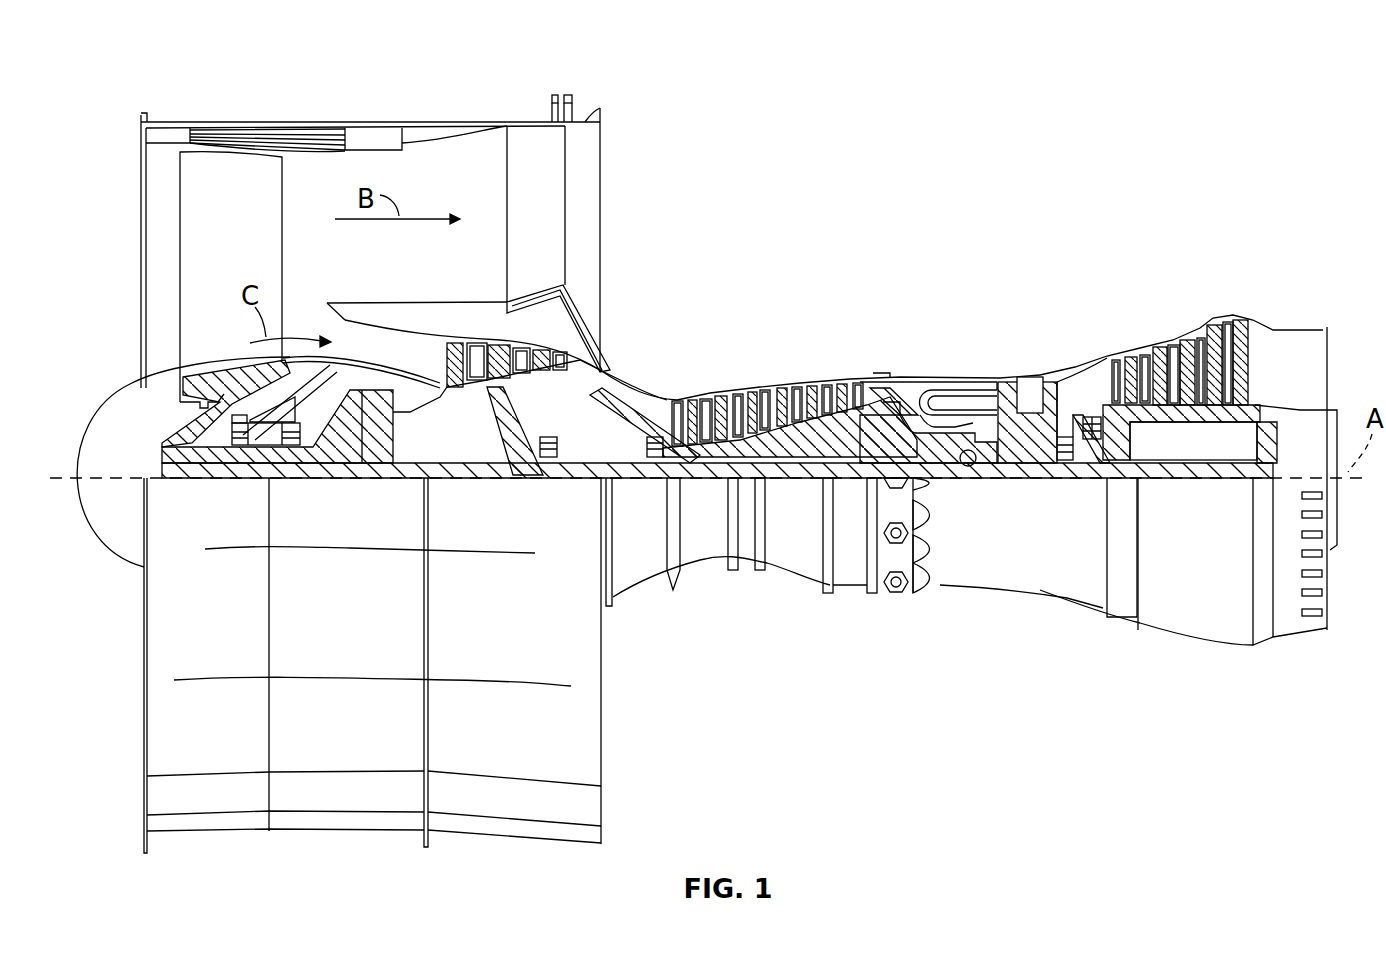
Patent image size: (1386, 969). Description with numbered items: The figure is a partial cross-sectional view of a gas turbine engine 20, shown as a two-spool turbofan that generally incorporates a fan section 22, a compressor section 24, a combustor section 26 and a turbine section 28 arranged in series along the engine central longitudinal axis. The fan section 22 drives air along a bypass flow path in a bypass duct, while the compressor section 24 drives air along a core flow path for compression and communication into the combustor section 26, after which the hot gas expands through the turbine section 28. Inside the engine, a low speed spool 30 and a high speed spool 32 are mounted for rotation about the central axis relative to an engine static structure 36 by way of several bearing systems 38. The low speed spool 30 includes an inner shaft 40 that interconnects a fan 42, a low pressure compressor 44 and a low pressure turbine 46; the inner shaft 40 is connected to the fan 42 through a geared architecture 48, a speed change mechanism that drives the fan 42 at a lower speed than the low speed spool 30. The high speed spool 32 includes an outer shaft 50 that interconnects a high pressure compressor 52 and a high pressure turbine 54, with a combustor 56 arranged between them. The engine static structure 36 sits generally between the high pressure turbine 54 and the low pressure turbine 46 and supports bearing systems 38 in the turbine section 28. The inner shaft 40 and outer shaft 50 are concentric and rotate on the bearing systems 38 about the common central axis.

The gas turbine engine 20 is at (1159, 155).
The fan section 22 is at (219, 108).
The compressor section 24 is at (788, 330).
The combustor section 26 is at (942, 334).
The turbine section 28 is at (1085, 318).
The low speed spool 30 is at (817, 488).
The high speed spool 32 is at (866, 425).
The engine static structure 36 is at (852, 597).
The bearing systems 38 is at (242, 445).
The inner shaft 40 is at (612, 481).
The fan 42 is at (223, 243).
The low pressure compressor 44 is at (517, 360).
The low pressure turbine 46 is at (1186, 332).
The geared architecture 48 is at (373, 445).
The outer shaft 50 is at (966, 466).
The high pressure compressor 52 is at (796, 432).
The high pressure turbine 54 is at (1030, 374).
The combustor 56 is at (957, 398).